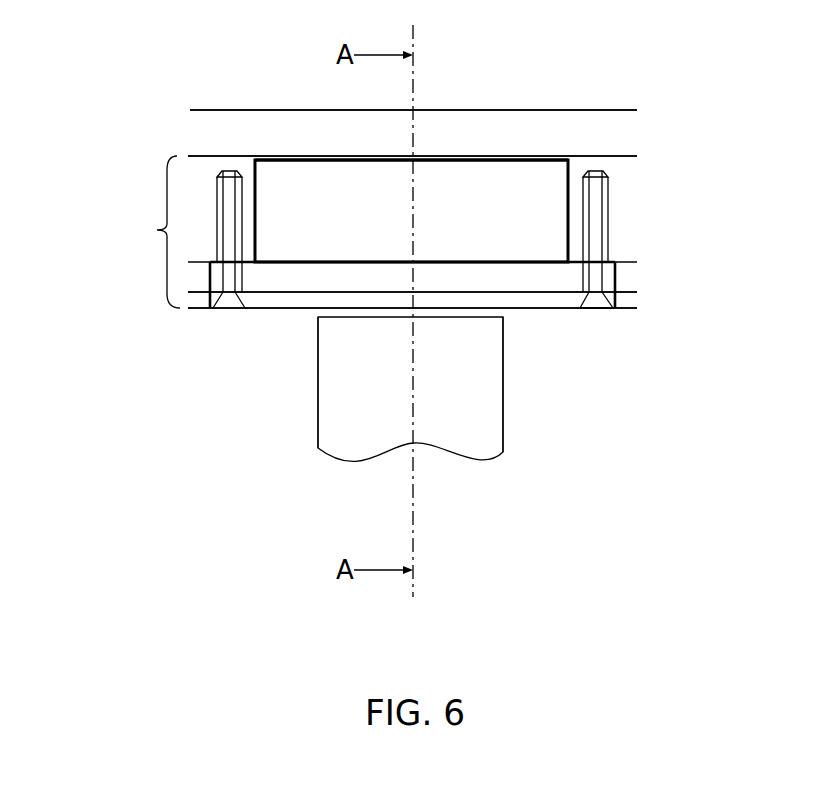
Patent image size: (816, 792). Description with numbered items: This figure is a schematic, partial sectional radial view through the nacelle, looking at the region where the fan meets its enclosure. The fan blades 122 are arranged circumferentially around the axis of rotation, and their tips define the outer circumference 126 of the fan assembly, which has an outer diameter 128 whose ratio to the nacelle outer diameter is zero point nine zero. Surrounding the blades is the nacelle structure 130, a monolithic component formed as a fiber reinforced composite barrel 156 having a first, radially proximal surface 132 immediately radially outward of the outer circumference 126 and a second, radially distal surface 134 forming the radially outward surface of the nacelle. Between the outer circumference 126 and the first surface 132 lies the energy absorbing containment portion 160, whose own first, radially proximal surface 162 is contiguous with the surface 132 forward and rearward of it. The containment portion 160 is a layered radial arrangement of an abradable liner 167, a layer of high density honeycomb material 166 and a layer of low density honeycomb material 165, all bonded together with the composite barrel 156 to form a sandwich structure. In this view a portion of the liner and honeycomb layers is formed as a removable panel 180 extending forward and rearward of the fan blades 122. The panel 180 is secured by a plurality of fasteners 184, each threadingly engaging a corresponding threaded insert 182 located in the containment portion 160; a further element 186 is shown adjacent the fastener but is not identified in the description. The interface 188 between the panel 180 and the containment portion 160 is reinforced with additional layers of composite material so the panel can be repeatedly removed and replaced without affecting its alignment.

The fan blades 122 is at (490, 433).
The outer circumference of the fan assembly 126 is at (337, 313).
The outer diameter of the fan assembly 128 is at (487, 315).
The nacelle structure 130 is at (233, 110).
The first, radially proximal surface 132 is at (430, 157).
The second, radially distal surface 134 is at (287, 110).
The fiber reinforced composite barrel 156 is at (208, 125).
The containment portion 160 is at (157, 230).
The first, radially proximal surface of the containment portion 162 is at (277, 310).
The layer of low density honeycomb material 165 is at (188, 180).
The layer of high density honeycomb material 166 is at (628, 277).
The abradable liner 167 is at (632, 302).
The removable panel 180 is at (510, 173).
The threaded inserts 182 is at (595, 210).
The fasteners 184 is at (598, 304).
The bolt shank 186 is at (590, 310).
The interface 188 is at (213, 258).